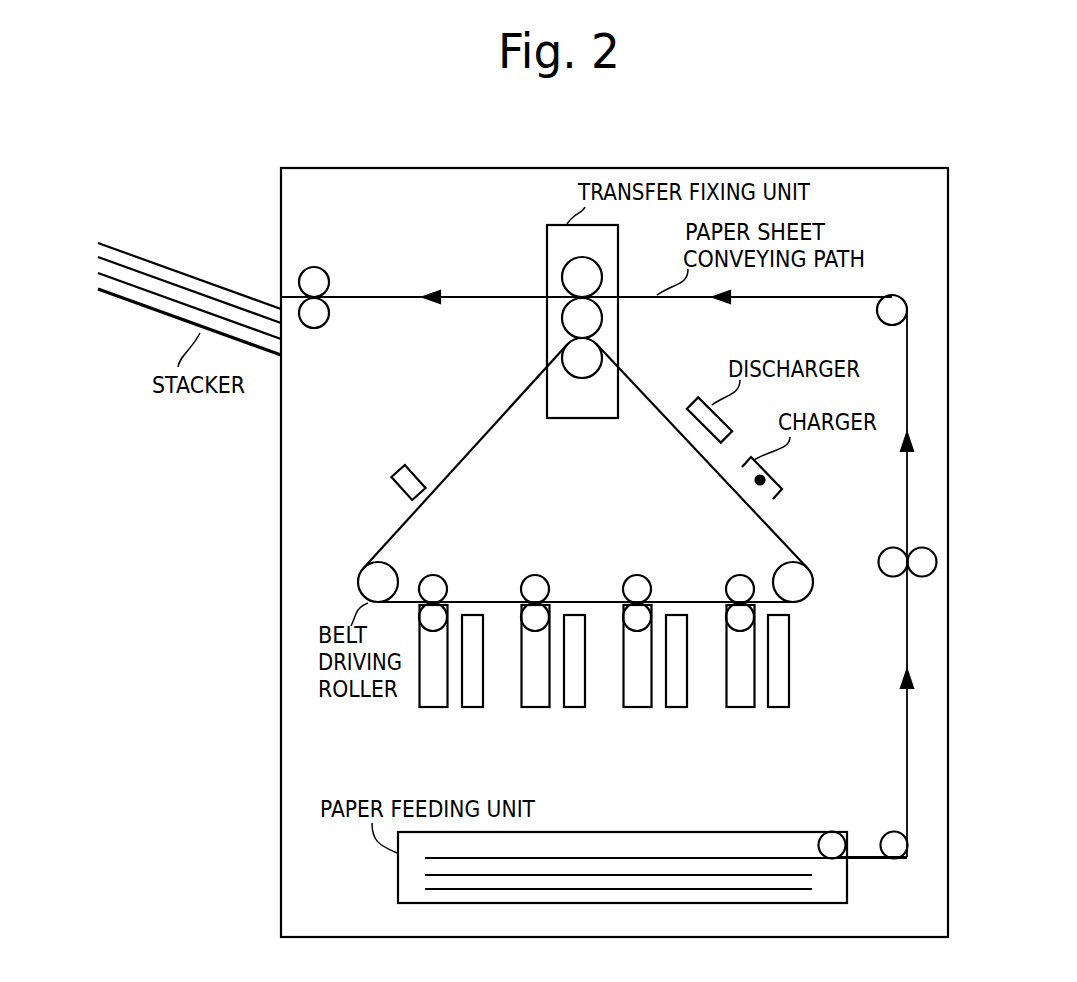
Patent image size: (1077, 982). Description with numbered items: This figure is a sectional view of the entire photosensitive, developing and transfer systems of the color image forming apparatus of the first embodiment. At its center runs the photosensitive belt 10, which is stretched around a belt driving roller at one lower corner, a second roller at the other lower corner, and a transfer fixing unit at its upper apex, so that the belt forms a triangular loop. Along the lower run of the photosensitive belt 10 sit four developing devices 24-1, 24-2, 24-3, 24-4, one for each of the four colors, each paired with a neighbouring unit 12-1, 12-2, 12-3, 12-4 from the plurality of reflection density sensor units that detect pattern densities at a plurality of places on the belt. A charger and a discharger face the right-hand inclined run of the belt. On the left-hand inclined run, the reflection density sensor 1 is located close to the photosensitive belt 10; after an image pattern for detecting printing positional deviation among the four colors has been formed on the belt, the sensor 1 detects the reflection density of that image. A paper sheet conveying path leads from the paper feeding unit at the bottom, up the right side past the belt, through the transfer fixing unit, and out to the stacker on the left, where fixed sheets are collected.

The reflection density sensor 1 is at (398, 468).
The photosensitive belt 10 is at (523, 390).
The reflection density sensor unit 12-1 is at (774, 707).
The reflection density sensor unit 12-2 is at (672, 707).
The reflection density sensor unit 12-3 is at (570, 707).
The reflection density sensor unit 12-4 is at (468, 707).
The developing device 24-1 is at (739, 707).
The developing device 24-2 is at (636, 707).
The developing device 24-3 is at (534, 707).
The developing device 24-4 is at (432, 707).